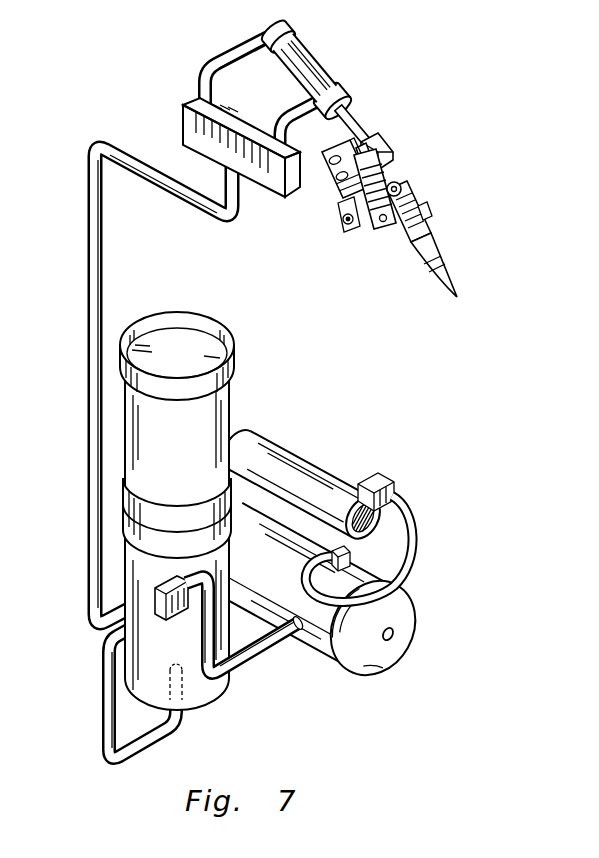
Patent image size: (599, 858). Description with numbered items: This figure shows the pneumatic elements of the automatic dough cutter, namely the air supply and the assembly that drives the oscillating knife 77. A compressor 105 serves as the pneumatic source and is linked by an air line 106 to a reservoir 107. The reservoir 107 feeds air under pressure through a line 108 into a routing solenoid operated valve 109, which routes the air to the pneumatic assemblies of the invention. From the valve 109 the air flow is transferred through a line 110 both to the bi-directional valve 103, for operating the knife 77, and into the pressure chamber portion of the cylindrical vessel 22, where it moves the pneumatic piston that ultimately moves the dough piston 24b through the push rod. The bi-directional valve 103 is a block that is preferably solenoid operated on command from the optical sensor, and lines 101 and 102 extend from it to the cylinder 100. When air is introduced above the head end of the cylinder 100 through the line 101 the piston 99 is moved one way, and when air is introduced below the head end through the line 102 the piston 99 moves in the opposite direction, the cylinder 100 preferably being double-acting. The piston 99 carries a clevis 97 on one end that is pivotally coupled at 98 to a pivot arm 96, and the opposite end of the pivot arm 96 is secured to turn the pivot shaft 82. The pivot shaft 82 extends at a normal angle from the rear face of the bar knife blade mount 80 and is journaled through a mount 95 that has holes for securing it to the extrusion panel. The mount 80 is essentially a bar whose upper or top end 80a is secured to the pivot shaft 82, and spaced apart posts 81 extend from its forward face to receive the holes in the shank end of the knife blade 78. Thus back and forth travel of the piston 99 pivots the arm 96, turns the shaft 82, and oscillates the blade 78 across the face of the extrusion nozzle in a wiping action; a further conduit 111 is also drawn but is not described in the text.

The cylindrical vessel 22 is at (229, 405).
The dough piston 24b is at (197, 365).
The oscillating knife 77 is at (416, 129).
The knife blade 78 is at (453, 270).
The bar knife blade mount 80 is at (407, 232).
The top end of mount 80a is at (408, 186).
The posts 81 is at (430, 212).
The pivot shaft 82 is at (376, 220).
The mount 95 is at (330, 180).
The pivot arm 96 is at (343, 220).
The clevis 97 is at (374, 143).
The pivotal coupling 98 is at (394, 157).
The piston 99 is at (357, 107).
The cylinder 100 is at (303, 38).
The line 101 is at (225, 58).
The line 102 is at (288, 120).
The bi-directional valve 103 is at (182, 118).
The compressor 105 is at (317, 470).
The air line 106 is at (411, 551).
The reservoir 107 is at (414, 610).
The line 108 is at (263, 655).
The routing solenoid operated valve 109 is at (155, 580).
The line 110 is at (88, 413).
The conduit 111 is at (103, 718).